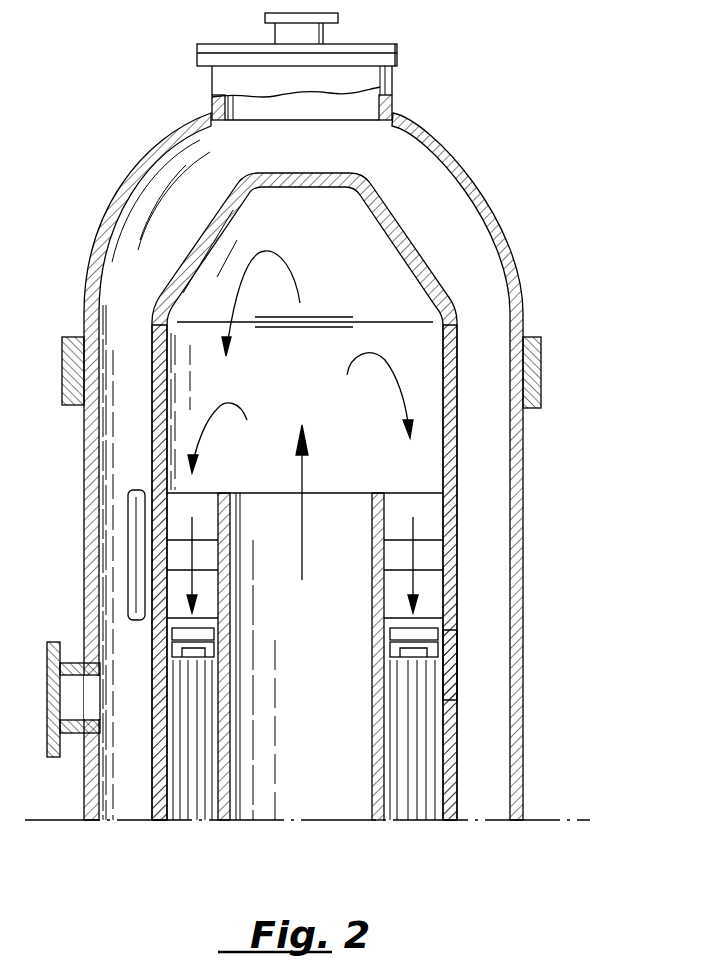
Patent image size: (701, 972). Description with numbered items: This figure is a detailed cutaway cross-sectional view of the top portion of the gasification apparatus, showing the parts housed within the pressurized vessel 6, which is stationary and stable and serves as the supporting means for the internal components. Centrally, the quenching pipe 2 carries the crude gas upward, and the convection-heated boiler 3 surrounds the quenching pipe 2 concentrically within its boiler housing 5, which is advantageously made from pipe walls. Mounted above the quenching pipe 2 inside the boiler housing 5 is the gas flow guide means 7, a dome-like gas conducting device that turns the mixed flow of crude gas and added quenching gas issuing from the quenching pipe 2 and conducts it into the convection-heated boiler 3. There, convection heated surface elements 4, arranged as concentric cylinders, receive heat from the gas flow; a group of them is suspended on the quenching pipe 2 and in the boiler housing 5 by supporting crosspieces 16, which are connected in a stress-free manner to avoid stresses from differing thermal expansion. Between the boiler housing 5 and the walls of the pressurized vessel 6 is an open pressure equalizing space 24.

The quenching pipe 2 is at (325, 795).
The convection-heated boiler 3 is at (438, 720).
The convection heated surface elements 4 is at (423, 747).
The boiler housing 5 is at (455, 662).
The pressurized vessel 6 is at (520, 577).
The gas flow guide means 7 is at (367, 237).
The supporting crosspieces 16 is at (423, 635).
The pressure equalizing space 24 is at (105, 523).